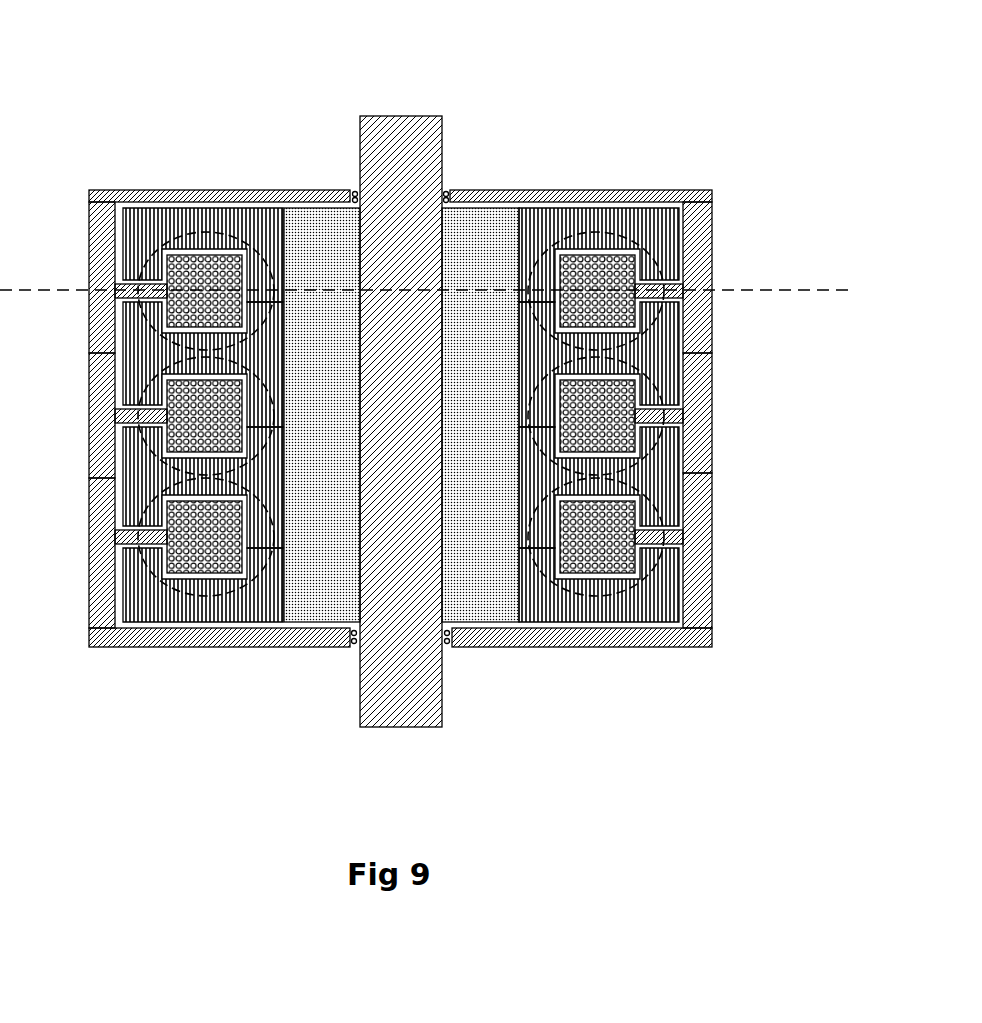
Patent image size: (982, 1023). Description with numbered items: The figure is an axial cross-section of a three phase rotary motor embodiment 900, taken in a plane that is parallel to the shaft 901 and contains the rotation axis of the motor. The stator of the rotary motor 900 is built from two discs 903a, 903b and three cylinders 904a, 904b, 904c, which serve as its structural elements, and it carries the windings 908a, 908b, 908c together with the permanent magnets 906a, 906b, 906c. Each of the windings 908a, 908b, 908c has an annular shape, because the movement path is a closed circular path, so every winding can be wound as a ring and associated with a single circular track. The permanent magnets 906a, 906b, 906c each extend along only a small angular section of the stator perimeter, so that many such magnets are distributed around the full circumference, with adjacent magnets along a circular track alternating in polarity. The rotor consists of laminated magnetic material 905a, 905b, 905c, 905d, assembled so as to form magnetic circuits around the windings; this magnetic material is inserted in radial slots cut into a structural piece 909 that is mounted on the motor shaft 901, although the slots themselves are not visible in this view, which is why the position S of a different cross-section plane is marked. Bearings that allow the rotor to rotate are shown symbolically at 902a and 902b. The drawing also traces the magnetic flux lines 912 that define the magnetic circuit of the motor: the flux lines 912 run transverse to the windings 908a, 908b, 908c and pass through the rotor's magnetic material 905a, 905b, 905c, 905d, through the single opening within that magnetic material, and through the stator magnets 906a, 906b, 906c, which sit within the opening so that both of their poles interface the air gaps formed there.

The rotary motor embodiment 900 is at (232, 105).
The shaft 901 is at (398, 178).
The bearing 902a is at (450, 187).
The bearing 902b is at (450, 653).
The disc 903a is at (553, 192).
The disc 903b is at (497, 645).
The cylinder 904a is at (707, 227).
The cylinder 904b is at (698, 418).
The cylinder 904c is at (695, 603).
The laminated magnetic material 905a is at (607, 206).
The laminated magnetic material 905b is at (645, 348).
The laminated magnetic material 905c is at (683, 473).
The laminated magnetic material 905d is at (620, 615).
The permanent magnet 906a is at (677, 283).
The permanent magnet 906b is at (683, 412).
The permanent magnet 906c is at (683, 533).
The winding 908a is at (683, 307).
The winding 908b is at (636, 439).
The winding 908c is at (640, 557).
The structural piece 909 is at (463, 237).
The magnetic flux lines 912 is at (180, 233).
The cross section plane position S is at (60, 287).